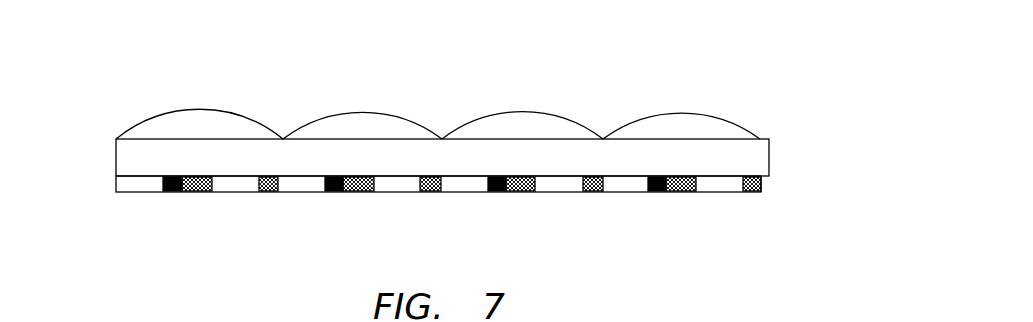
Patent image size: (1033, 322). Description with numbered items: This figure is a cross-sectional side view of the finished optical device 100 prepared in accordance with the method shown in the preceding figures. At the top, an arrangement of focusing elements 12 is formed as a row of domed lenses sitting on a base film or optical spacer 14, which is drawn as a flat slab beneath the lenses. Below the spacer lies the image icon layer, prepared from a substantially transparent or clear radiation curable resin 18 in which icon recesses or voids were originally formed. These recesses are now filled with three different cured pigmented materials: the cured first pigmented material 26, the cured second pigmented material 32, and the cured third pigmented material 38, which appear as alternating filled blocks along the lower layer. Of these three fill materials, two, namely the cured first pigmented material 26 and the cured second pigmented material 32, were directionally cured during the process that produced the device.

The optical device 100 is at (713, 90).
The arrangement of focusing elements 12 is at (758, 135).
The base film or optical spacer 14 is at (457, 167).
The radiation curable resin 18 is at (623, 192).
The cured first pigmented material 26 is at (195, 192).
The cured second pigmented material 32 is at (173, 190).
The cured third pigmented material 38 is at (183, 192).